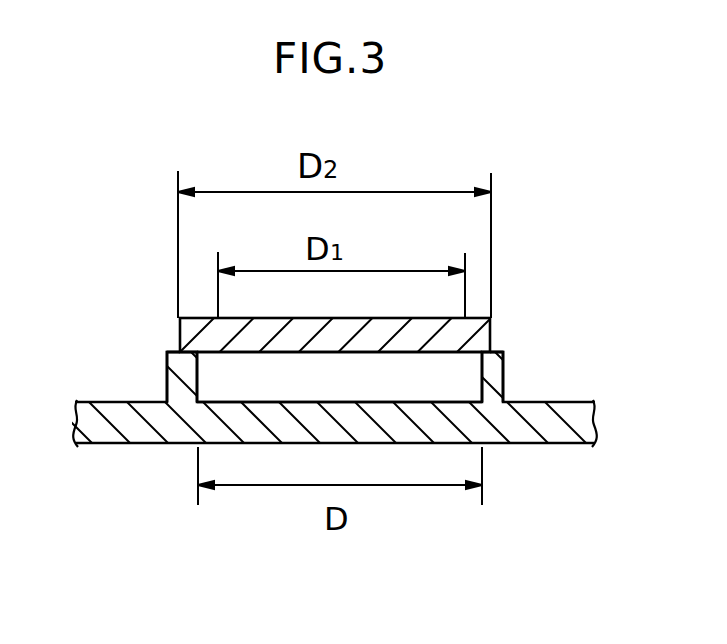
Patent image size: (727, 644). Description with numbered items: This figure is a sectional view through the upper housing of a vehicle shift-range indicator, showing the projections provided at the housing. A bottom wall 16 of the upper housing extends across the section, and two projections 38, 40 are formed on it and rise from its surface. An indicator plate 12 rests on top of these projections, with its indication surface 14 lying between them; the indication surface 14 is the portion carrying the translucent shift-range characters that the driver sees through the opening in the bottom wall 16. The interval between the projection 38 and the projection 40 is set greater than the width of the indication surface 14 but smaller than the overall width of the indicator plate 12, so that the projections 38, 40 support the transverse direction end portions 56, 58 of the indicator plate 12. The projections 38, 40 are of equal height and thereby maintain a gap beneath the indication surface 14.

The indicator plate 12 is at (319, 313).
The indication surface 14 is at (318, 355).
The bottom wall 16 is at (575, 398).
The projection 38 is at (167, 373).
The projection 40 is at (505, 375).
The transverse direction end portion 56 is at (495, 351).
The transverse direction end portion 58 is at (177, 351).